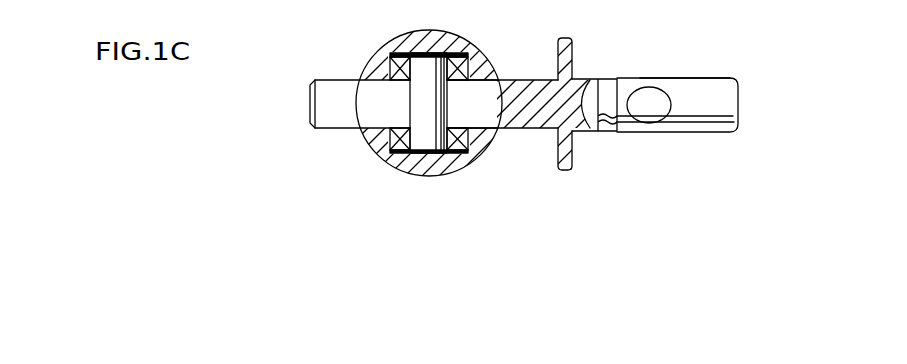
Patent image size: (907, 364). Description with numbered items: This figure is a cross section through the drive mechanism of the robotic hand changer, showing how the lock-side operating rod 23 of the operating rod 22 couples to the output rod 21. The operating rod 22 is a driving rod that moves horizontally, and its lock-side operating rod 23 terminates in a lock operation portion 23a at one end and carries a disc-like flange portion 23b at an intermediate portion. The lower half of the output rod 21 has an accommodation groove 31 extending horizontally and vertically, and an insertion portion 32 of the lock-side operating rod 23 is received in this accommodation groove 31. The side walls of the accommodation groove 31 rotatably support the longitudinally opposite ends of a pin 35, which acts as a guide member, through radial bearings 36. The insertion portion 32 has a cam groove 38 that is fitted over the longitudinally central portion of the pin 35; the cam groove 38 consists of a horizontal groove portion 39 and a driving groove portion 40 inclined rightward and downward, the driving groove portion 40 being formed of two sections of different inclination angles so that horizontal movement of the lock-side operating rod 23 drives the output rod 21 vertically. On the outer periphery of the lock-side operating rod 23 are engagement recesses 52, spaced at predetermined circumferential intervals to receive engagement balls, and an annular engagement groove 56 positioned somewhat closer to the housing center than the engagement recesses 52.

The output rod 21 is at (438, 125).
The operating rod 22 is at (677, 105).
The lock-side operating rod 23 is at (728, 126).
The lock operation portion 23a is at (740, 93).
The flange portion 23b is at (568, 152).
The accommodation groove 31 is at (373, 123).
The insertion portion 32 is at (586, 125).
The pin 35 is at (428, 140).
The radial bearings 36 is at (397, 68).
The cam groove 38 is at (392, 141).
The horizontal groove portion 39 is at (323, 103).
The driving groove portion 40 is at (472, 118).
The engagement recesses 52 is at (655, 100).
The annular engagement groove 56 is at (607, 78).